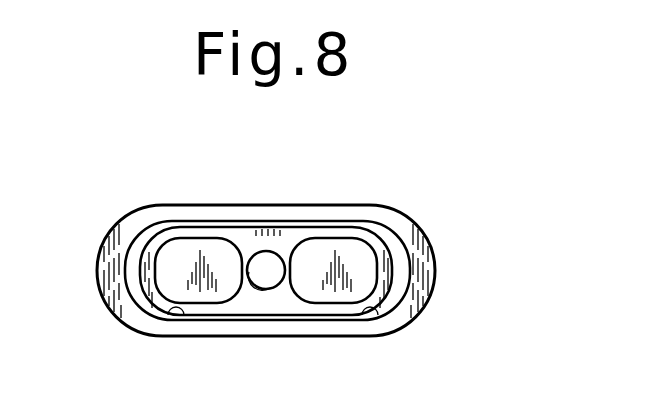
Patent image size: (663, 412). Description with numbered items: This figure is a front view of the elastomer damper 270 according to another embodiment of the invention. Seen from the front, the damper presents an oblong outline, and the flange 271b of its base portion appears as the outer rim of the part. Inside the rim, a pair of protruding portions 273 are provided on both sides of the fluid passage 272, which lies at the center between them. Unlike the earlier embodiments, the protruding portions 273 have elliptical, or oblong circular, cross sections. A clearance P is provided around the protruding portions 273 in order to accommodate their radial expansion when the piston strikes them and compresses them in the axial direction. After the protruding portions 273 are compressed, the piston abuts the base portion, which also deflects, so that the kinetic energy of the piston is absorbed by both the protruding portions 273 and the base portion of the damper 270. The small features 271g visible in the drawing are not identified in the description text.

The elastomer damper 270 is at (437, 313).
The flange 271b is at (425, 250).
The notch 271g is at (181, 316).
The fluid passage 272 is at (268, 289).
The protruding portions 273 is at (177, 238).
The clearance P is at (211, 232).